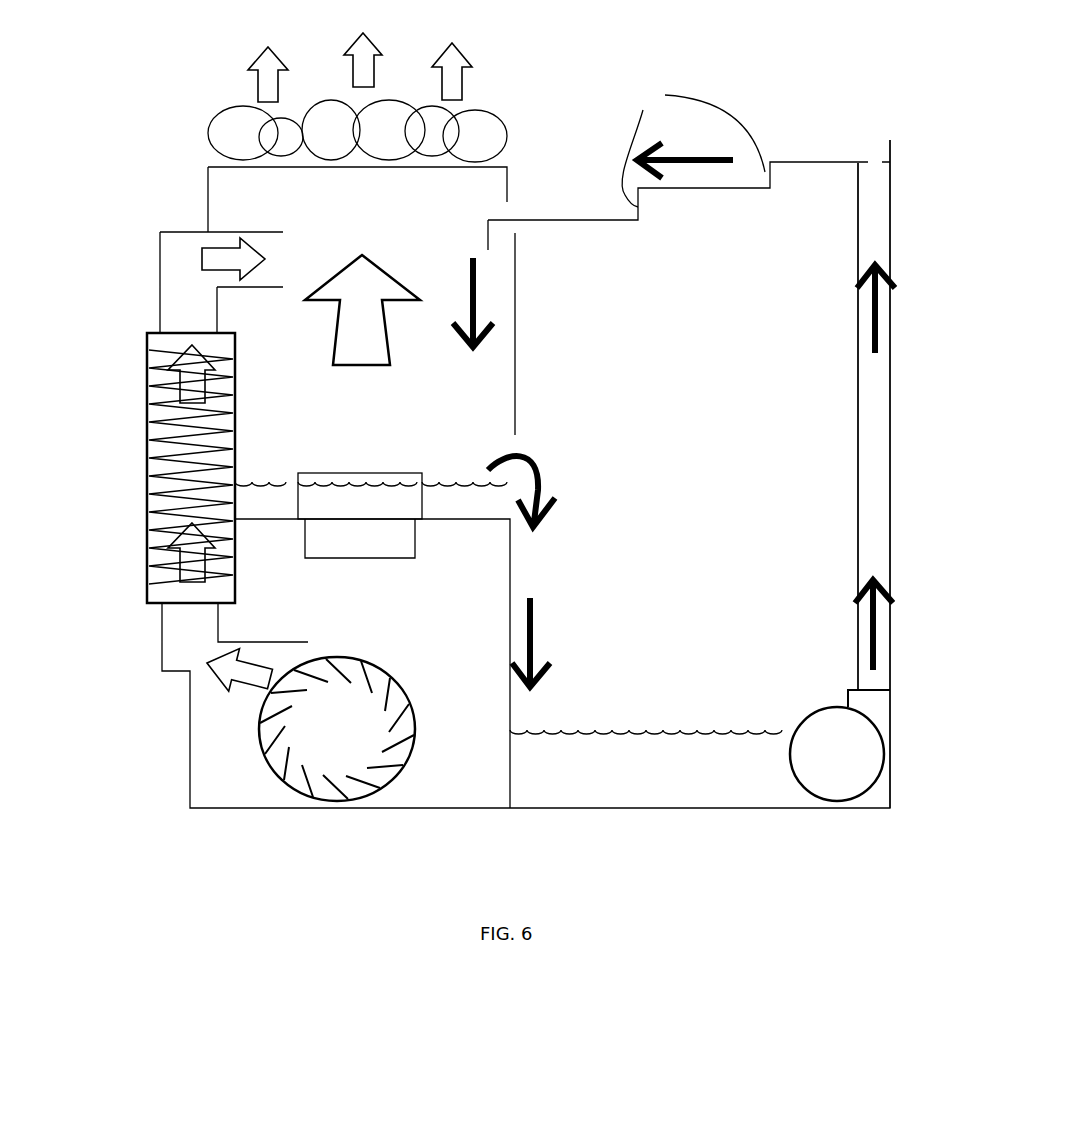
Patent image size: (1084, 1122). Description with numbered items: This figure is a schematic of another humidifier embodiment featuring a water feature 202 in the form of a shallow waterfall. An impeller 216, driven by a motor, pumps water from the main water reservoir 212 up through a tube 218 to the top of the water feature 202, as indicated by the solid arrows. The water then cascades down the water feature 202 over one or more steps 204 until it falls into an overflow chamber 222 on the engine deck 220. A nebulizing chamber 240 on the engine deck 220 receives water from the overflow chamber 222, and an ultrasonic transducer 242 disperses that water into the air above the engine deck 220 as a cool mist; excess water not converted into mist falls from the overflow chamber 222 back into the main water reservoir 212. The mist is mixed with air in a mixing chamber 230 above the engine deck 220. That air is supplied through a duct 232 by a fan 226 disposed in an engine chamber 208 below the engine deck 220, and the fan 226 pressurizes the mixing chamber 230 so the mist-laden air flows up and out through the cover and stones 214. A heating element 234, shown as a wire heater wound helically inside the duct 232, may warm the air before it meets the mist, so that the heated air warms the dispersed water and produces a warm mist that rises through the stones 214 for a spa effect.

The water feature 202 is at (773, 98).
The steps 204 is at (693, 147).
The engine chamber 208 is at (350, 608).
The main water reservoir 212 is at (646, 712).
The stones 214 is at (485, 130).
The impeller 216 is at (828, 750).
The tube 218 is at (867, 423).
The engine deck 220 is at (307, 438).
The overflow chamber 222 is at (456, 470).
The fan 226 is at (405, 688).
The mixing chamber 230 is at (399, 284).
The duct 232 is at (130, 407).
The heating element 234 is at (160, 537).
The nebulizing chamber 240 is at (345, 478).
The ultrasonic transducer 242 is at (413, 538).